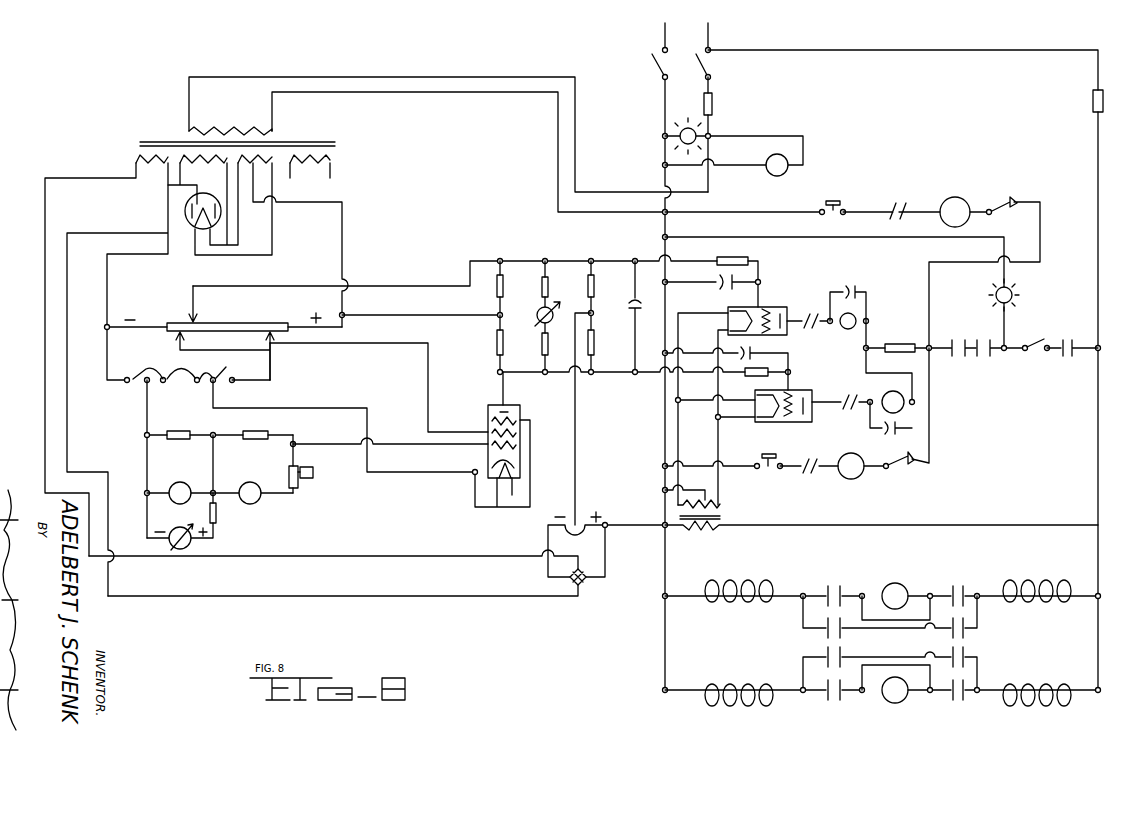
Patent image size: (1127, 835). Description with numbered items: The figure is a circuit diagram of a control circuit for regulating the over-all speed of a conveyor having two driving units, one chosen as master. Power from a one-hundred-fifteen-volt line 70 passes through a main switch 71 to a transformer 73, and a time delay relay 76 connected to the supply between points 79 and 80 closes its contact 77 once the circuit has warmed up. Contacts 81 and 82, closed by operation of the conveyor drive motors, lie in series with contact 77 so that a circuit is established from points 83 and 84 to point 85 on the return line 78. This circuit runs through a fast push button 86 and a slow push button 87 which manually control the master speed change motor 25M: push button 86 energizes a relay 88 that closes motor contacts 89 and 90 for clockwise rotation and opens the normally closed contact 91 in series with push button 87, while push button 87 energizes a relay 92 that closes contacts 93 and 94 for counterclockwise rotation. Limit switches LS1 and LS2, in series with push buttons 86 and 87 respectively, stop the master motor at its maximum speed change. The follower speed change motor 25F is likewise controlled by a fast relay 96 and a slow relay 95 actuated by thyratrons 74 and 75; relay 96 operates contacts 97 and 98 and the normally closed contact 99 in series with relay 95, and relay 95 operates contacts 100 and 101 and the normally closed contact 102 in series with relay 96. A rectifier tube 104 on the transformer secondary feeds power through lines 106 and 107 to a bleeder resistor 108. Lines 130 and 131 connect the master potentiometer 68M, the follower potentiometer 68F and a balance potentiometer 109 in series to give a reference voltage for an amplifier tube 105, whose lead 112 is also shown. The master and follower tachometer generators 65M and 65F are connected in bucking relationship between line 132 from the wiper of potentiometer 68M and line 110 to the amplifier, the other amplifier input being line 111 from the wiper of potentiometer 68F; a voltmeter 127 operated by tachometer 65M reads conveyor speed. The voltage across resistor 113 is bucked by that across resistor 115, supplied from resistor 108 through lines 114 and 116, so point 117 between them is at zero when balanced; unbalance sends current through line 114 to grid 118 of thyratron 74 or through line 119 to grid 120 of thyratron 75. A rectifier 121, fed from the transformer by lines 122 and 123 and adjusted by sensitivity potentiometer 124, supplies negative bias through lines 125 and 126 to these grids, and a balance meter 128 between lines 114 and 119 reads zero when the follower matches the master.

The line 70 is at (700, 34).
The main switch 71 is at (712, 77).
The transformer 73 is at (174, 137).
The thyratron 74 is at (762, 312).
The thyratron 75 is at (796, 416).
The time delay relay 76 is at (785, 173).
The contact 77 is at (1060, 356).
The return line 78 is at (1098, 298).
The point 79 is at (712, 132).
The point 80 is at (662, 165).
The contact 81 is at (959, 343).
The contact 82 is at (981, 343).
The point 83 is at (672, 210).
The point 84 is at (663, 467).
The point 85 is at (1099, 351).
The fast push button 86 is at (840, 203).
The slow push button 87 is at (769, 475).
The relay 88 is at (962, 200).
The motor contact 89 is at (834, 702).
The motor contact 90 is at (968, 652).
The normally closed contact 91 is at (812, 474).
The relay 92 is at (860, 476).
The normally open contact 93 is at (826, 653).
The normally open contact 94 is at (960, 700).
The slow relay 95 is at (889, 394).
The fast relay 96 is at (870, 344).
The normally open contact 97 is at (833, 588).
The normally open contact 98 is at (968, 636).
The normally closed contact 99 is at (841, 415).
The normally open contact 100 is at (826, 625).
The normally open contact 101 is at (958, 583).
The normally closed contact 102 is at (812, 314).
The rectifier tube 104 is at (187, 226).
The amplifier tube 105 is at (488, 415).
The line 106 is at (108, 316).
The line 107 is at (342, 251).
The bleeder resistor 108 is at (232, 323).
The potentiometer 109 is at (181, 383).
The line 110 is at (398, 445).
The line 111 is at (398, 475).
The conductor 112 is at (497, 508).
The resistor 113 is at (497, 346).
The line 114 is at (572, 250).
The resistor 115 is at (497, 287).
The line 116 is at (430, 318).
The point 117 is at (497, 322).
The grid 118 is at (762, 294).
The line 119 is at (606, 378).
The grid 120 is at (793, 393).
The rectifier 121 is at (590, 586).
The line 122 is at (318, 558).
The line 123 is at (480, 597).
The potentiometer 124 is at (605, 543).
The line 125 is at (578, 452).
The line 126 is at (594, 325).
The voltmeter 127 is at (192, 548).
The balance meter 128 is at (535, 322).
The line 130 is at (273, 371).
The line 131 is at (107, 350).
The line 132 is at (146, 416).
The follower speed change motor 25F is at (898, 584).
The master speed change motor 25M is at (903, 704).
The master tachometer generator 65M is at (178, 482).
The follower tachometer generator 65F is at (248, 482).
The master potentiometer 68M is at (146, 365).
The follower potentiometer 68F is at (232, 362).
The limit switch LS1 is at (1015, 198).
The limit switch LS2 is at (905, 464).